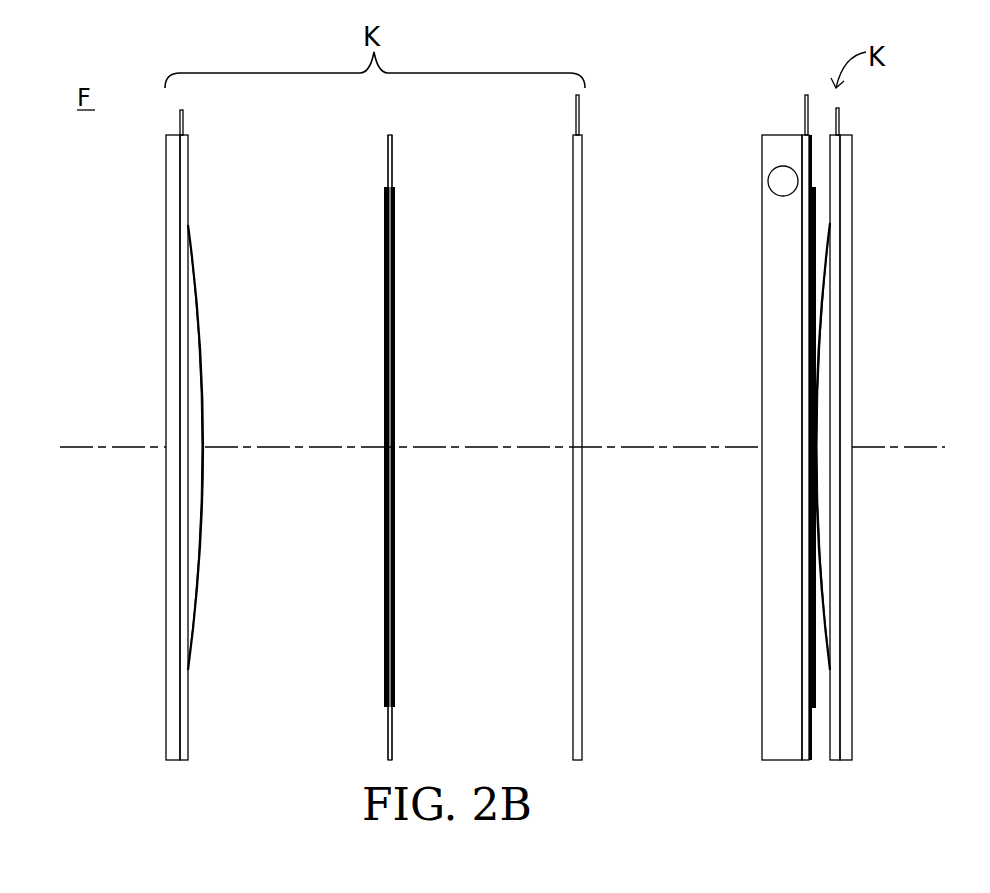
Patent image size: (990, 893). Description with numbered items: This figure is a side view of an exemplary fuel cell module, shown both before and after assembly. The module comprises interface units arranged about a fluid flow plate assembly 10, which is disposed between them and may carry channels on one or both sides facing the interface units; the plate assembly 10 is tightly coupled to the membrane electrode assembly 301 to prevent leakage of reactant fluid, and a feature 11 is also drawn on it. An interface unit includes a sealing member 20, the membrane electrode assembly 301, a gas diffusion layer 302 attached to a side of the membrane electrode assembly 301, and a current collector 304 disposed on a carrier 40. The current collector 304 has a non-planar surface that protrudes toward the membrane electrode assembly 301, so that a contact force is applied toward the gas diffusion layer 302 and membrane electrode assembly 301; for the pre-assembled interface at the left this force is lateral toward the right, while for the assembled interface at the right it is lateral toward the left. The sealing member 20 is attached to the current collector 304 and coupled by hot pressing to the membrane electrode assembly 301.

The fluid flow plate assembly 10 is at (782, 681).
The hole 11 is at (769, 181).
The sealing member 20 is at (186, 172).
The carrier 40 is at (172, 702).
The membrane electrode assembly 301 is at (393, 733).
The gas diffusion layer 302 is at (384, 656).
The current collector 304 is at (196, 597).